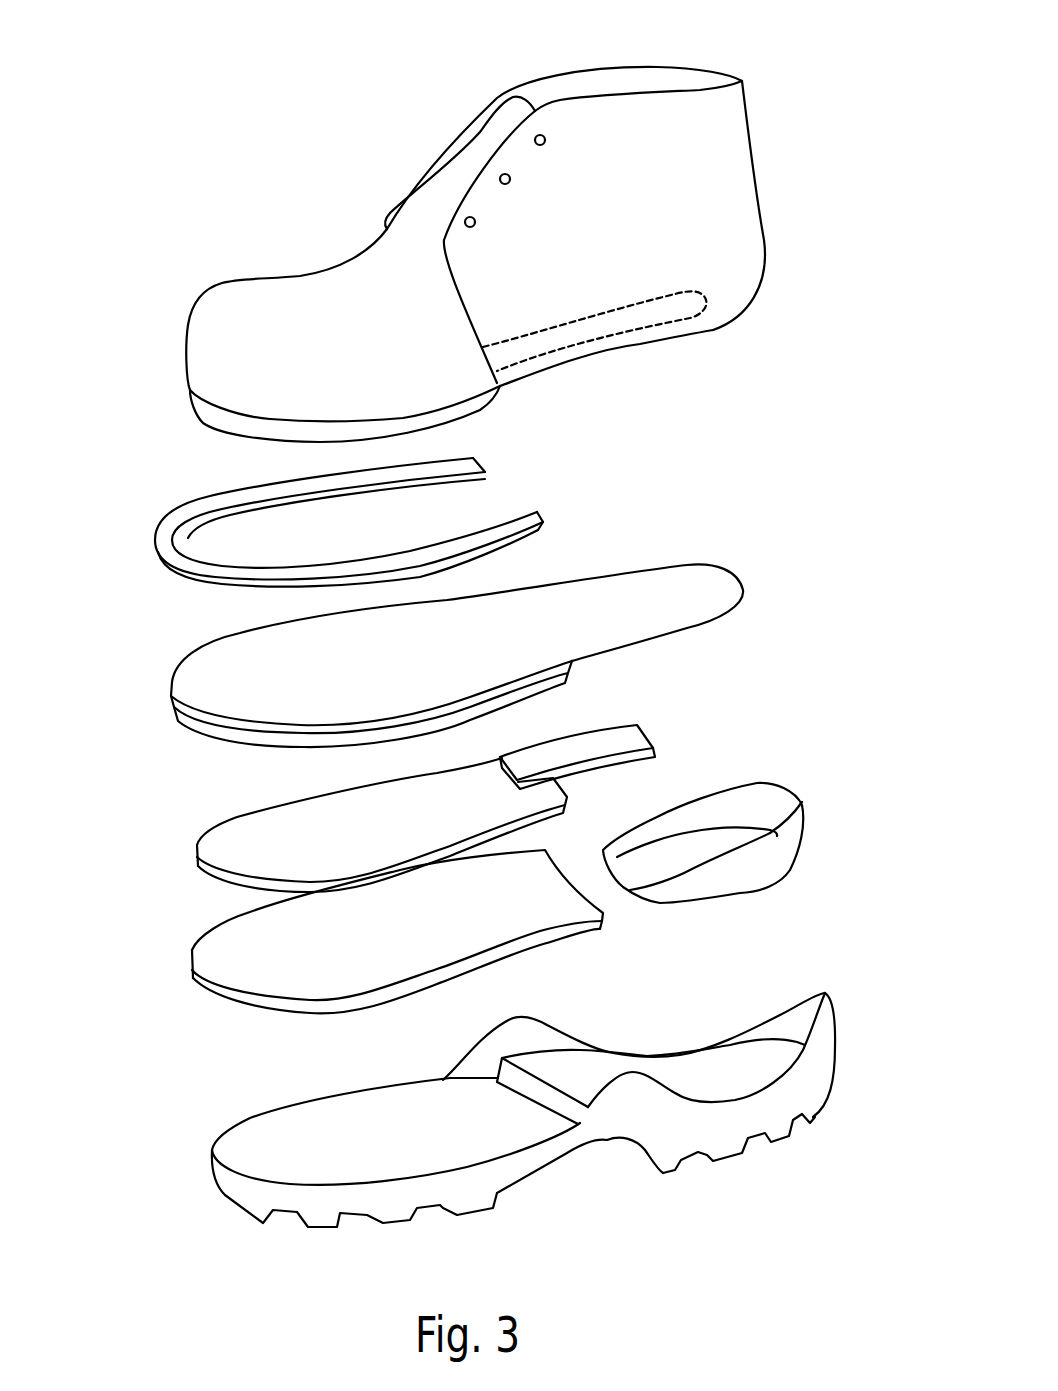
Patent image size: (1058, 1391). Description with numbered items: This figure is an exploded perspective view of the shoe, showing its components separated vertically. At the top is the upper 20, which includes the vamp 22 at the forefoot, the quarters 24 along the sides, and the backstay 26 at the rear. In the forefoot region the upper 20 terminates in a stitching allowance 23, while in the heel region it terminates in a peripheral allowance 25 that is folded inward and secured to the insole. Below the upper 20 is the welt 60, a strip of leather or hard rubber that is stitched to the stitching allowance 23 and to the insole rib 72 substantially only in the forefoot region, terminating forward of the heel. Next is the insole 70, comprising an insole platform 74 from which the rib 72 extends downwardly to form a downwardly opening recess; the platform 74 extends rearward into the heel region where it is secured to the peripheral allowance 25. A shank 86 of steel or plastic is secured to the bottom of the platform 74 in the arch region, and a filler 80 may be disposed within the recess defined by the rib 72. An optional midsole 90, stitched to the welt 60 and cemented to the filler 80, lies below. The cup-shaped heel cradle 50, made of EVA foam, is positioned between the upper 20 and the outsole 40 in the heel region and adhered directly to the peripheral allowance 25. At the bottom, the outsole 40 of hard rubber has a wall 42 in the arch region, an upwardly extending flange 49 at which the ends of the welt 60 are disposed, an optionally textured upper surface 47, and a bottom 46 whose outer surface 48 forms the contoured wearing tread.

The upper 20 is at (513, 222).
The vamp 22 is at (258, 303).
The stitching allowance 23 is at (478, 413).
The quarters 24 is at (712, 170).
The peripheral allowance 25 is at (637, 330).
The backstay 26 is at (755, 262).
The outsole 40 is at (560, 1098).
The wall 42 is at (555, 1090).
The bottom 46 is at (817, 1123).
The upper surface 47 is at (738, 1073).
The outer surface 48 is at (780, 1140).
The flange 49 is at (613, 1105).
The heel cradle 50 is at (808, 828).
The welt 60 is at (153, 525).
The insole 70 is at (406, 677).
The insole rib 72 is at (205, 727).
The insole platform 74 is at (220, 680).
The filler 80 is at (195, 855).
The shank 86 is at (630, 733).
The midsole 90 is at (192, 973).